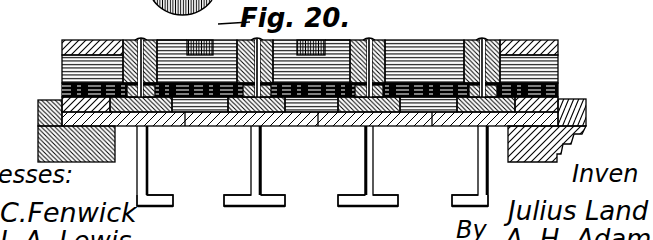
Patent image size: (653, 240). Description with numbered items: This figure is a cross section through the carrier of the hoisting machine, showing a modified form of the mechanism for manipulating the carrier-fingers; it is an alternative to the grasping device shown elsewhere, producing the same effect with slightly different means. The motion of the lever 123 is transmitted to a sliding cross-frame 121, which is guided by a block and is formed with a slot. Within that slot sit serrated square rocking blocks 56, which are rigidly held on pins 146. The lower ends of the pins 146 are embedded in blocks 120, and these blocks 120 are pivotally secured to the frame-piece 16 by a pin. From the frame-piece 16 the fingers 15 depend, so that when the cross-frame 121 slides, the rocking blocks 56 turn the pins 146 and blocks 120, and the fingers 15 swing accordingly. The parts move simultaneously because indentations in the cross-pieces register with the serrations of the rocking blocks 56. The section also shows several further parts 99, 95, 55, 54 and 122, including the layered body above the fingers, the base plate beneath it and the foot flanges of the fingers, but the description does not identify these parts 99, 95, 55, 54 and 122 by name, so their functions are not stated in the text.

The sliding cross-frame 121 is at (62, 44).
The blocks 120 is at (62, 78).
The lever 123 is at (184, 40).
The strip 99 is at (203, 40).
The spacer 95 is at (318, 50).
The serrated square rocking blocks 56 is at (125, 42).
The pins 146 is at (141, 38).
The bed plate 55 is at (586, 110).
The frame-piece 16 is at (185, 124).
The supporting block 54 is at (312, 144).
The fingers 15 is at (250, 154).
The foot flange 122 is at (222, 209).